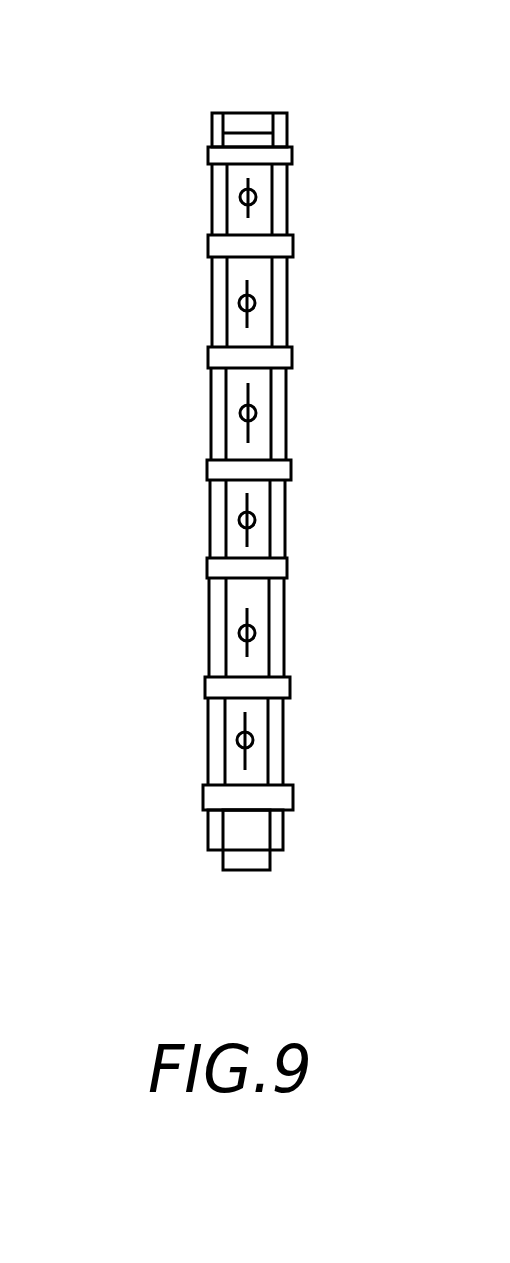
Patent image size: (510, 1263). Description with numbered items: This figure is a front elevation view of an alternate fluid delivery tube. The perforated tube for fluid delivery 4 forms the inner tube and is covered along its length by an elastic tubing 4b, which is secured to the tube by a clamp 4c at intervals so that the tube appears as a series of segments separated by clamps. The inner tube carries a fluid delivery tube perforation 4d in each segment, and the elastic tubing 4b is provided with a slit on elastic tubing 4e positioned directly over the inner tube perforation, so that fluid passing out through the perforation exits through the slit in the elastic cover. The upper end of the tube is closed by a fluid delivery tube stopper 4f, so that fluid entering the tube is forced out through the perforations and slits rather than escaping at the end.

The perforated tube for fluid delivery 4 is at (238, 333).
The elastic tubing 4b is at (217, 197).
The clamp 4c is at (217, 467).
The fluid delivery tube perforation 4d is at (240, 633).
The slit on elastic tubing 4e is at (245, 722).
The fluid delivery tube stopper 4f is at (250, 123).